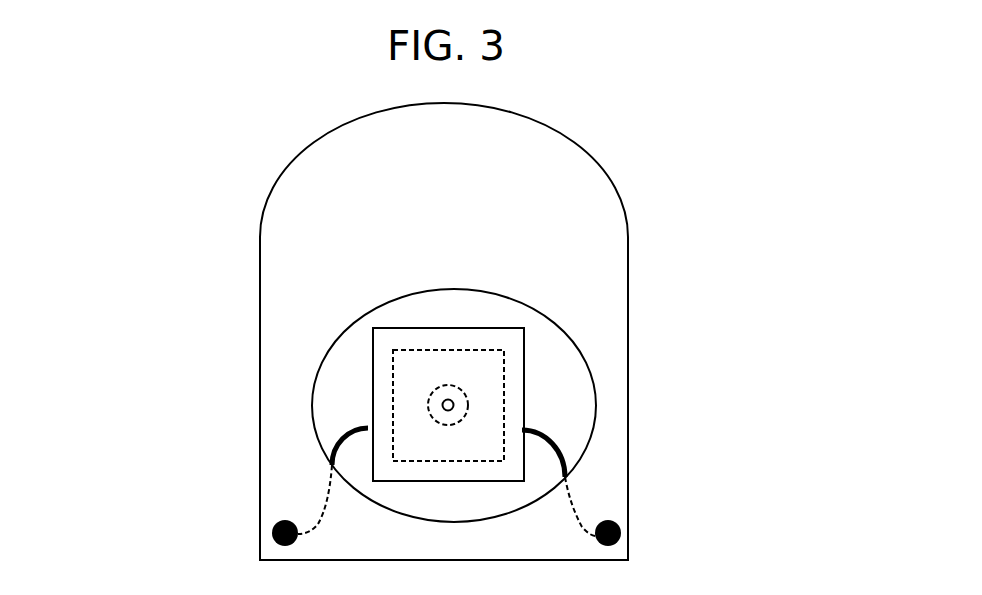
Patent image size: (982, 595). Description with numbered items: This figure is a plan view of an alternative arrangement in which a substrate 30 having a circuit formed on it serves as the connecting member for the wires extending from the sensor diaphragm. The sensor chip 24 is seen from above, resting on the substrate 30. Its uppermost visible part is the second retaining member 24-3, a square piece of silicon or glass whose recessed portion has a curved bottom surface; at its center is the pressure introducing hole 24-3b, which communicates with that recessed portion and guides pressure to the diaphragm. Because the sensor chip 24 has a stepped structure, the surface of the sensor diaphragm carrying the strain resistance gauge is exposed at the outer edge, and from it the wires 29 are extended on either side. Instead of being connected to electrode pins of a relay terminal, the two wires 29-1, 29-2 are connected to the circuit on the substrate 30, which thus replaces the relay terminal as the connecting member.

The substrate 30 is at (585, 218).
The sensor chip 24 is at (464, 338).
The second retaining member 24-3 is at (525, 368).
The pressure introducing hole 24-3b is at (446, 398).
The wires 29 is at (461, 487).
The wire 29-1 is at (348, 436).
The wire 29-2 is at (558, 451).